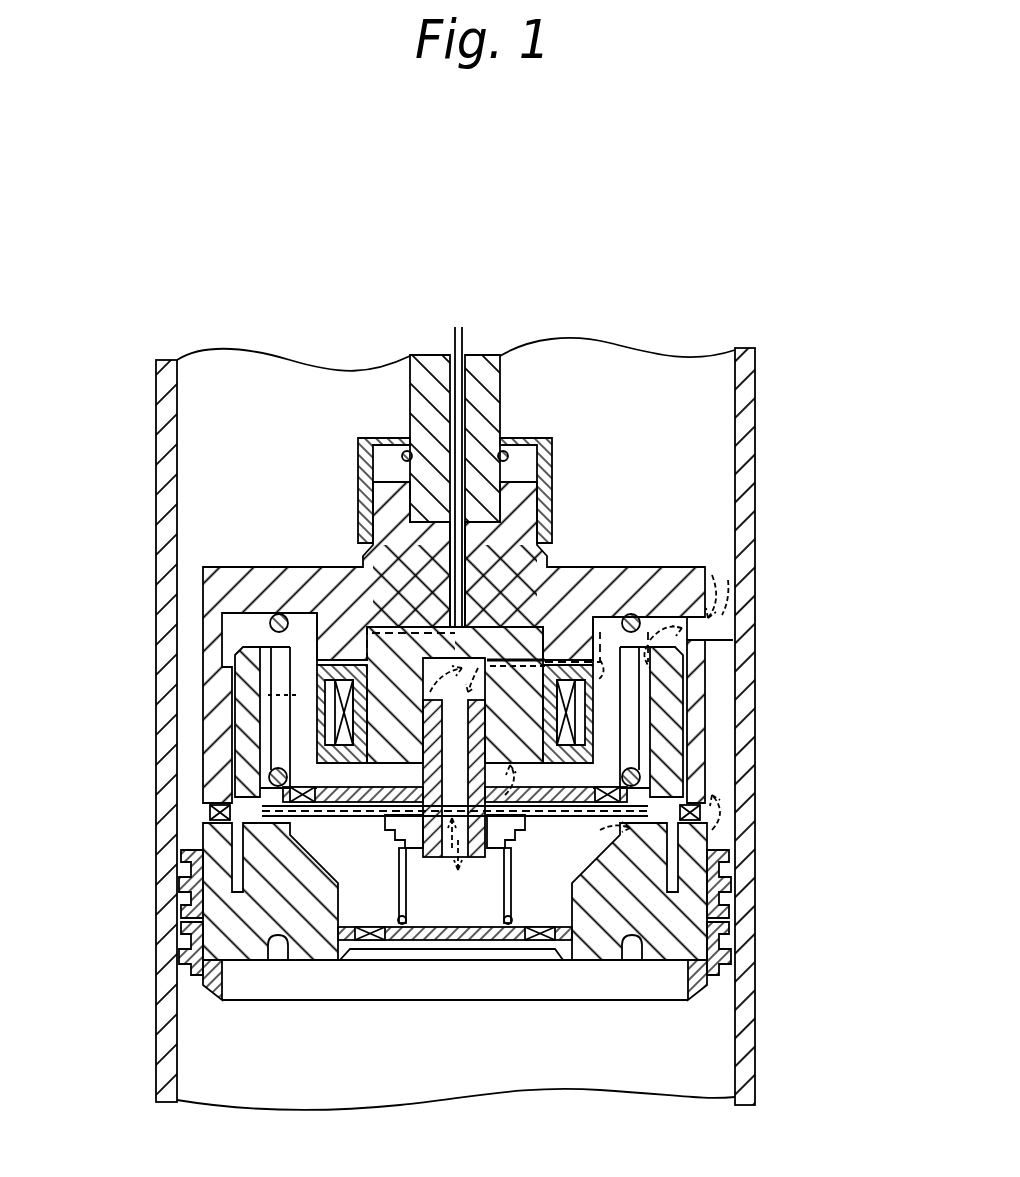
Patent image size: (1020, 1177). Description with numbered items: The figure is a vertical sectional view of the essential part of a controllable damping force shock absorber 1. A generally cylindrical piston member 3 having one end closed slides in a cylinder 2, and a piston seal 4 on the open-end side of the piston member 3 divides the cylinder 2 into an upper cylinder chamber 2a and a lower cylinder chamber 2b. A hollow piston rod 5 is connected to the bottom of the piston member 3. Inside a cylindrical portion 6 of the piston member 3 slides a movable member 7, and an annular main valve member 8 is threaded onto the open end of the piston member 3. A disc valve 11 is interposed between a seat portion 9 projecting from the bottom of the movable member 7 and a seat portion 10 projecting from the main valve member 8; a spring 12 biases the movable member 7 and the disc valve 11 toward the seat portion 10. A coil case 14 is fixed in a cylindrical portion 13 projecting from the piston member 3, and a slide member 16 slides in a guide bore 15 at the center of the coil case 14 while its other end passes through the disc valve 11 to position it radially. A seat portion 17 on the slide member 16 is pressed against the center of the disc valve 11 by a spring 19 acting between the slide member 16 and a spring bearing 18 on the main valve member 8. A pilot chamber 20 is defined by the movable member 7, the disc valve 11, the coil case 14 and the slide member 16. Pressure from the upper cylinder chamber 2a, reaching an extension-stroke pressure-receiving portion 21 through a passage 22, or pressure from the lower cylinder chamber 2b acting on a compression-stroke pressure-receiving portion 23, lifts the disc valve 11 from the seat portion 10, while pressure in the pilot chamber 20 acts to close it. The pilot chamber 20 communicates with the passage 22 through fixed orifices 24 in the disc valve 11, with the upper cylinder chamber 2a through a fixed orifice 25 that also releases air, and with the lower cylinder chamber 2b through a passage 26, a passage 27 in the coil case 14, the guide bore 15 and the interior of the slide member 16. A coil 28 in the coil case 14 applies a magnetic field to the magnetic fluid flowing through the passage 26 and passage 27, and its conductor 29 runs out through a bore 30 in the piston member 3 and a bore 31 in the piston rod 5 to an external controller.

The controllable damping force shock absorber 1 is at (589, 212).
The cylinder 2 is at (720, 362).
The upper cylinder chamber 2a is at (705, 450).
The lower cylinder chamber 2b is at (707, 1078).
The piston member 3 is at (667, 567).
The piston seal 4 is at (707, 945).
The piston rod 5 is at (480, 358).
The cylindrical portion 6 is at (600, 752).
The movable member 7 is at (672, 722).
The main valve member 8 is at (670, 962).
The seat portion 9 is at (258, 815).
The seat portion 10 is at (200, 868).
The disc valve 11 is at (205, 922).
The spring 12 is at (268, 624).
The cylindrical portion 13 is at (292, 612).
The coil case 14 is at (337, 752).
The guide bore 15 is at (368, 628).
The slide member 16 is at (455, 862).
The seat portion 17 is at (385, 818).
The spring bearing 18 is at (512, 940).
The spring 19 is at (402, 930).
The pilot chamber 20 is at (565, 792).
The extension-stroke pressure-receiving portion 21 is at (650, 835).
The passage 22 is at (657, 815).
The compression-stroke pressure-receiving portion 23 is at (560, 835).
The fixed orifices 24 is at (722, 912).
The fixed orifice 25 is at (692, 642).
The passage 26 is at (605, 648).
The passage 27 is at (497, 662).
The coil 28 is at (322, 712).
The conductor 29 is at (455, 342).
The bore 30 is at (547, 540).
The bore 31 is at (475, 358).